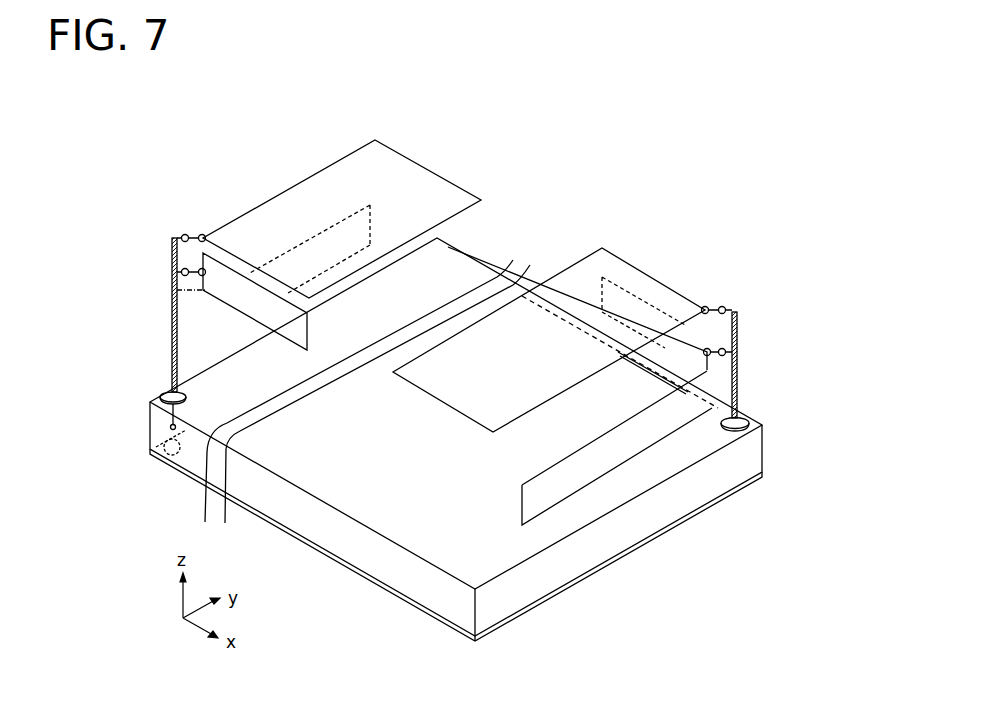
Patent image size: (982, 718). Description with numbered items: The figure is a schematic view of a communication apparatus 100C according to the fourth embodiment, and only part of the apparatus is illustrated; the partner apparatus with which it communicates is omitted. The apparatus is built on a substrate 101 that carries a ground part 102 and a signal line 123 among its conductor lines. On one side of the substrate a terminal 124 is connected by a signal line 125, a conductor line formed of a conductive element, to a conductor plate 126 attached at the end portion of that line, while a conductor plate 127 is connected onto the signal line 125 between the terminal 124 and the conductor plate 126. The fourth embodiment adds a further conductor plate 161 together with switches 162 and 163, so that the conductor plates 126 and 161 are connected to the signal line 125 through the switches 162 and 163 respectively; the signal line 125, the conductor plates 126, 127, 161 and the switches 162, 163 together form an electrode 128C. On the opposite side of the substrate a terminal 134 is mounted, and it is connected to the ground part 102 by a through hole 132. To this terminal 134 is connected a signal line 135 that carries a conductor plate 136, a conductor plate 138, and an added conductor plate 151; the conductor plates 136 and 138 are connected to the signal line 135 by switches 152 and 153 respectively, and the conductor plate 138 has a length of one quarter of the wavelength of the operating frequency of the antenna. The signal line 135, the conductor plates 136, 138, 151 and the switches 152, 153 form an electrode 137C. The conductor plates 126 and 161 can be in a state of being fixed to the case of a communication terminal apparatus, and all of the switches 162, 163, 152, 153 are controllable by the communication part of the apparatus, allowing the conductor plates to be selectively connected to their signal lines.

The communication apparatus 100C is at (543, 214).
The substrate 101 is at (478, 610).
The ground part 102 is at (192, 480).
The signal line 123 is at (643, 368).
The terminal 124 is at (746, 426).
The signal line 125 is at (737, 318).
The conductor plate 126 is at (623, 262).
The conductor plate 127 is at (587, 445).
The electrode 128C is at (798, 135).
The through hole 132 is at (168, 428).
The terminal 134 is at (160, 396).
The signal line 135 is at (180, 285).
The conductor plate 136 is at (235, 220).
The electrode 137C is at (97, 183).
The conductor plate 138 is at (177, 292).
The conductor plate 151 is at (172, 308).
The switch 152 is at (187, 232).
The switch 153 is at (186, 263).
The conductor plate 161 is at (617, 282).
The switch 162 is at (706, 305).
The switch 163 is at (724, 347).